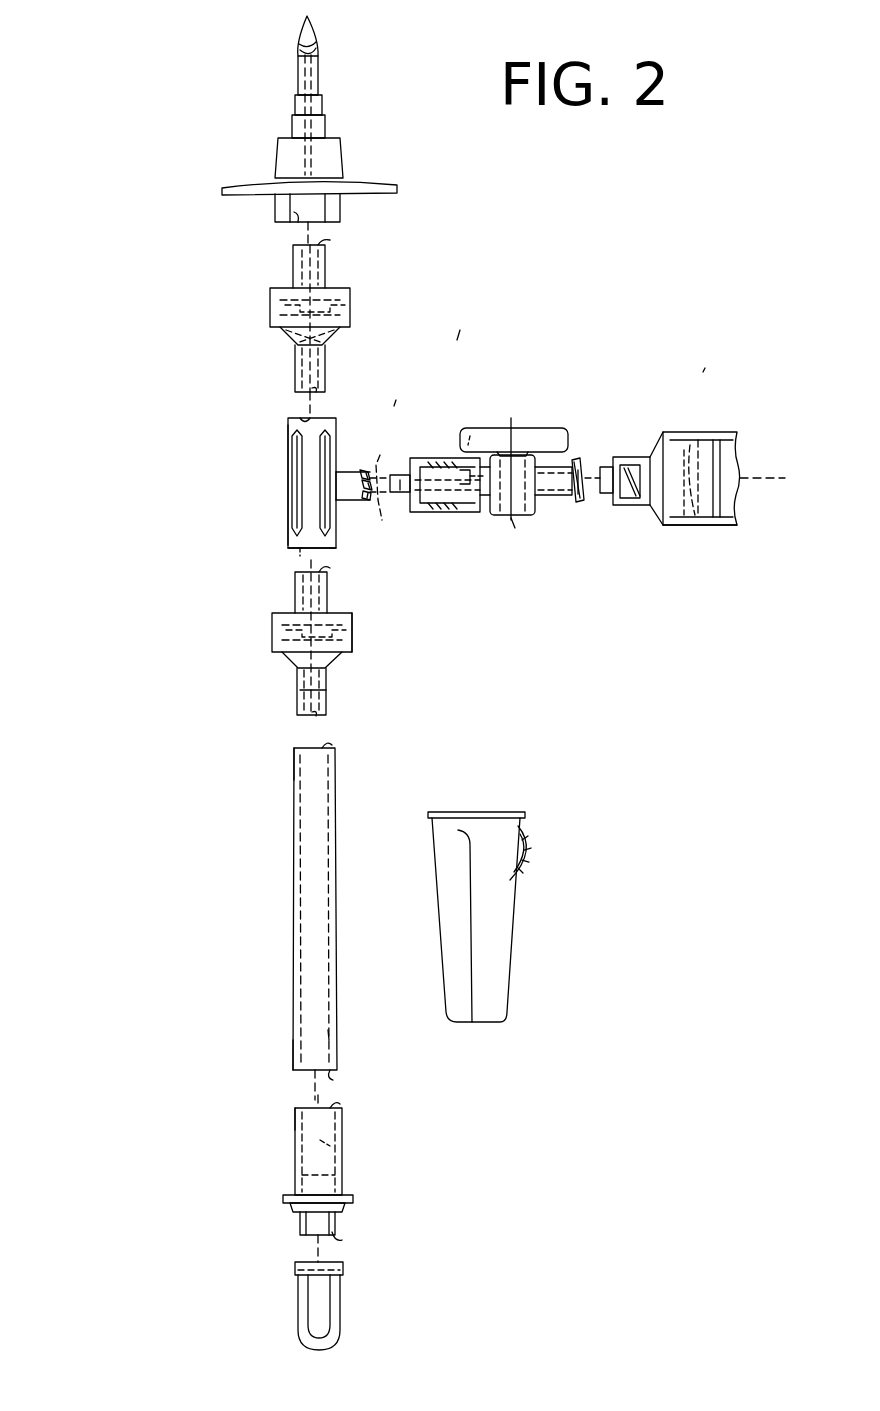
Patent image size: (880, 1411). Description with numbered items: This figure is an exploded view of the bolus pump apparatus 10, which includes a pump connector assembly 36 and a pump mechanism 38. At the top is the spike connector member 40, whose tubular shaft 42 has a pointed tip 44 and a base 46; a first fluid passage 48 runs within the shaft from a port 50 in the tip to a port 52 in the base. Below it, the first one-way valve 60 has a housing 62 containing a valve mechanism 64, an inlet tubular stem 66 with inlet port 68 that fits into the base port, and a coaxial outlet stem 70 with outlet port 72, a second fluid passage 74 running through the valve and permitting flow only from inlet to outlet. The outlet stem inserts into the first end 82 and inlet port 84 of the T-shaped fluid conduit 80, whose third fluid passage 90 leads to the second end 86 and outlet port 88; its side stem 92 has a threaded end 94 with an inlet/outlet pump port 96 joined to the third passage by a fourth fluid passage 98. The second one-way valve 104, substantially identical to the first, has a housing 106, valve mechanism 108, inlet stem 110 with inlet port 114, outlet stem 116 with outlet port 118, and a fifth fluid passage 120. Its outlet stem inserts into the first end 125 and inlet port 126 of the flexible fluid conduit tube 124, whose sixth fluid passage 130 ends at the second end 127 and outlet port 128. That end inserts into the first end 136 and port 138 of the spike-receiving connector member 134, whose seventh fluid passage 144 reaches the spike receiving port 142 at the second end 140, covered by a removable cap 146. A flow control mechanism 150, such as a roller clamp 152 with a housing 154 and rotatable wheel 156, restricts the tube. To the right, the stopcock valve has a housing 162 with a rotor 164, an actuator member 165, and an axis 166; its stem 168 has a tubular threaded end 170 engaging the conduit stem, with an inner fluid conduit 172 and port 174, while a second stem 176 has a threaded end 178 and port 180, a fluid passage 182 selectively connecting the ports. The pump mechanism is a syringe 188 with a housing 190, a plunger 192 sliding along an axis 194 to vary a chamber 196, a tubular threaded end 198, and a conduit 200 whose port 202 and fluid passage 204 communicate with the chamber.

The bolus pump apparatus 10 is at (455, 345).
The pump connector assembly 36 is at (393, 410).
The pump mechanism 38 is at (700, 378).
The spike connector member 40 is at (365, 155).
The tubular shaft 42 is at (318, 80).
The pointed tip 44 is at (311, 28).
The base 46 is at (341, 205).
The first fluid passage 48 is at (318, 100).
The port 50 is at (316, 55).
The port 52 is at (296, 225).
The first one-way valve 60 is at (364, 303).
The housing 62 is at (270, 322).
The valve mechanism 64 is at (272, 305).
The tubular stem 66 is at (326, 267).
The inlet port 68 is at (324, 250).
The tubular stem 70 is at (326, 370).
The outlet port 72 is at (320, 397).
The second fluid passage 74 is at (328, 338).
The fluid conduit 80 is at (287, 498).
The first end 82 is at (288, 438).
The inlet port 84 is at (300, 417).
The second end 86 is at (290, 542).
The outlet port 88 is at (290, 552).
The third fluid passage 90 is at (300, 528).
The stem 92 is at (344, 470).
The threaded end 94 is at (366, 500).
The inlet/outlet pump port 96 is at (382, 472).
The fourth fluid passage 98 is at (390, 468).
The second one-way valve 104 is at (380, 590).
The housing 106 is at (352, 630).
The valve mechanism 108 is at (272, 632).
The tubular stem 110 is at (295, 588).
The inlet port 114 is at (328, 578).
The tubular stem 116 is at (297, 688).
The outlet port 118 is at (322, 720).
The fifth fluid passage 120 is at (326, 688).
The fluid conduit tube 124 is at (336, 930).
The first end 125 is at (294, 760).
The inlet port 126 is at (334, 748).
The second end 127 is at (294, 1068).
The outlet port 128 is at (330, 1072).
The sixth fluid passage 130 is at (320, 1033).
The spike-receiving connector member 134 is at (375, 1177).
The first end 136 is at (295, 1110).
The port 138 is at (342, 1112).
The second end 140 is at (300, 1228).
The spike receiving port 142 is at (348, 1240).
The seventh fluid passage 144 is at (340, 1145).
The removable cap 146 is at (343, 1272).
The flow control mechanism 150 is at (570, 944).
The roller clamp 152 is at (508, 985).
The housing 154 is at (500, 912).
The rotatable wheel 156 is at (530, 842).
The housing 162 is at (500, 516).
The rotor 164 is at (540, 512).
The actuator member 165 is at (511, 418).
The axis 166 is at (513, 515).
The stem 168 is at (486, 505).
The tubular threaded end 170 is at (436, 512).
The fluid conduit 172 is at (390, 500).
The port 174 is at (466, 476).
The second stem 176 is at (582, 502).
The threaded end 178 is at (575, 462).
The port 180 is at (584, 498).
The fluid passage 182 is at (476, 430).
The syringe 188 is at (726, 432).
The housing 190 is at (730, 542).
The plunger 192 is at (702, 440).
The axis 194 is at (770, 480).
The chamber 196 is at (686, 512).
The tubular threaded end 198 is at (638, 506).
The conduit 200 is at (625, 455).
The port 202 is at (608, 468).
The fluid passage 204 is at (663, 442).